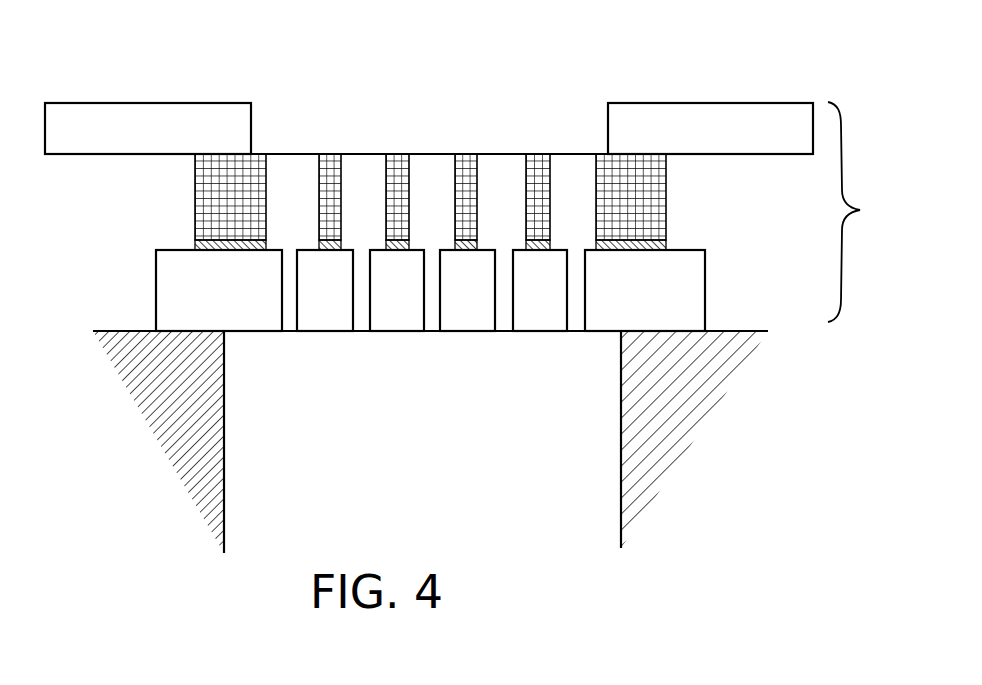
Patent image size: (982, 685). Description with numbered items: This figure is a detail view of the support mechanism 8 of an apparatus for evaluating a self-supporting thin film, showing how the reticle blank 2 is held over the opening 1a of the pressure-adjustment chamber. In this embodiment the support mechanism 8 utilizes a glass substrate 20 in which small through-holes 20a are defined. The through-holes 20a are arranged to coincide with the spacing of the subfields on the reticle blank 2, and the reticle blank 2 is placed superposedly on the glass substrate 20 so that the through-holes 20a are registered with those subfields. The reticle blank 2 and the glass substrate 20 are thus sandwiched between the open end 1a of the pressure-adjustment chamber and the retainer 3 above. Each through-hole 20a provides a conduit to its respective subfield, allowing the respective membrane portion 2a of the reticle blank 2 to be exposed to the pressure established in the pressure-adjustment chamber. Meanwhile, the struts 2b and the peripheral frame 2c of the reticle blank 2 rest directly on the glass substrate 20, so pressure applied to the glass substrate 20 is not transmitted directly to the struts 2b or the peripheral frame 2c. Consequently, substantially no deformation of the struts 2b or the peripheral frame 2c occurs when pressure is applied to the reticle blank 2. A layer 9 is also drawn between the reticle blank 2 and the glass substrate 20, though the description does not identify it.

The opening of pressure-adjustment chamber 1a is at (687, 407).
The reticle blank 2 is at (683, 199).
The membrane portions 2a is at (440, 152).
The struts 2b is at (341, 184).
The peripheral frame 2c is at (194, 185).
The retainer 3 is at (782, 134).
The support mechanism 8 is at (856, 212).
The adhesive layer 9 is at (665, 247).
The glass substrate 20 is at (688, 289).
The through-holes 20a is at (433, 333).